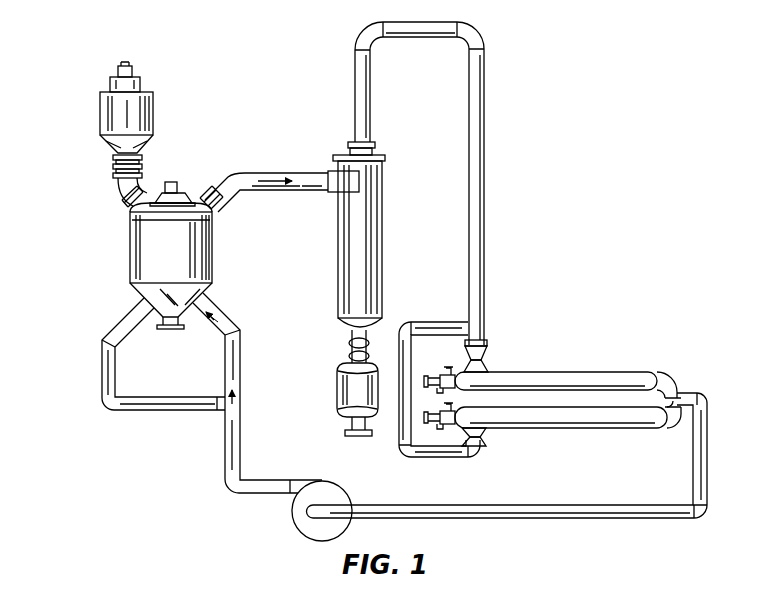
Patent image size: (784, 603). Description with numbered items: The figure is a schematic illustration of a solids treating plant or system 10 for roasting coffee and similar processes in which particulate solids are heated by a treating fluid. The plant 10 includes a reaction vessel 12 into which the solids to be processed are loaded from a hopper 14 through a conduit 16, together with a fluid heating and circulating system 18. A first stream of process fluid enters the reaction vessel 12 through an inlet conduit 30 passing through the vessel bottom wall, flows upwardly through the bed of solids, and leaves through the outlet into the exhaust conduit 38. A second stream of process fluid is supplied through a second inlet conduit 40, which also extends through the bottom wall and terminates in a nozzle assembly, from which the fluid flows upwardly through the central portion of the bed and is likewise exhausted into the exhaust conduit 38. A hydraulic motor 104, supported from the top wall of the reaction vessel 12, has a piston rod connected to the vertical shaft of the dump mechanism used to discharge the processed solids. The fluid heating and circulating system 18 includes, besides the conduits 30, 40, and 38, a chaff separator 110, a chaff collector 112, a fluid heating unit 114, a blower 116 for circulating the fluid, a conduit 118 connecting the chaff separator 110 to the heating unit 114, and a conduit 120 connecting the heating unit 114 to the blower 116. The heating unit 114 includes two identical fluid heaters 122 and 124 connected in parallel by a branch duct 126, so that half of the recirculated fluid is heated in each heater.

The solids treating plant 10 is at (293, 77).
The reaction vessel 12 is at (130, 250).
The hopper 14 is at (110, 112).
The conduit 16 is at (122, 197).
The fluid heating and circulating system 18 is at (512, 320).
The inlet conduit 30 is at (201, 308).
The exhaust conduit 38 is at (220, 186).
The second inlet conduit 40 is at (102, 363).
The hydraulic motor 104 is at (176, 182).
The chaff separator 110 is at (342, 255).
The chaff collector 112 is at (340, 392).
The fluid heating unit 114 is at (512, 367).
The blower 116 is at (316, 490).
The conduit 118 is at (485, 135).
The conduit 120 is at (510, 506).
The fluid heater 122 is at (593, 373).
The fluid heater 124 is at (547, 418).
The branch duct 126 is at (399, 428).